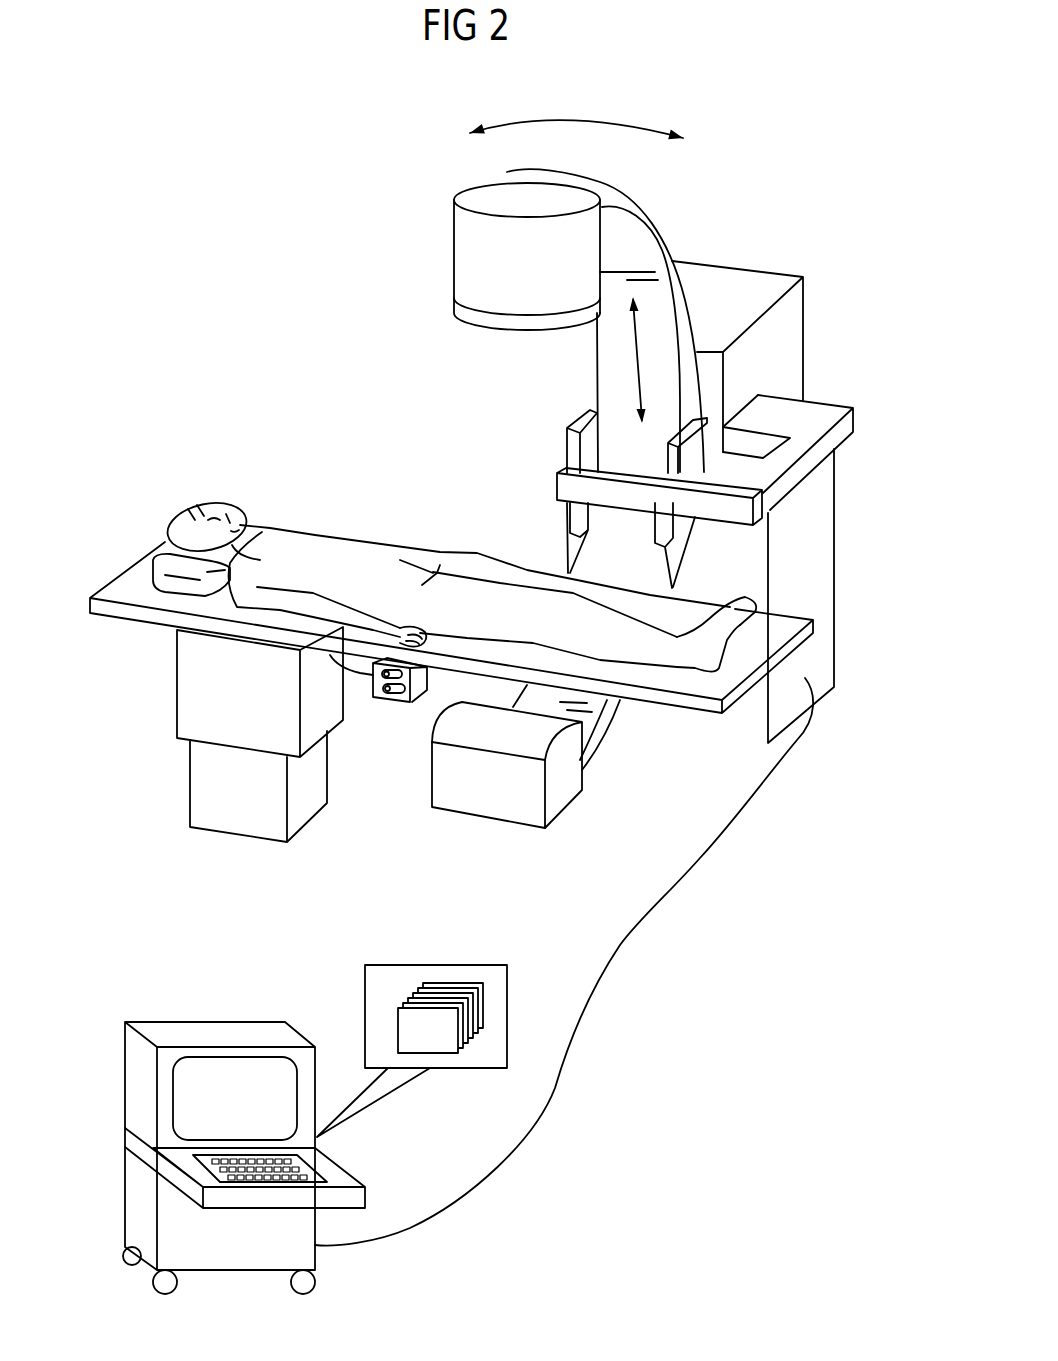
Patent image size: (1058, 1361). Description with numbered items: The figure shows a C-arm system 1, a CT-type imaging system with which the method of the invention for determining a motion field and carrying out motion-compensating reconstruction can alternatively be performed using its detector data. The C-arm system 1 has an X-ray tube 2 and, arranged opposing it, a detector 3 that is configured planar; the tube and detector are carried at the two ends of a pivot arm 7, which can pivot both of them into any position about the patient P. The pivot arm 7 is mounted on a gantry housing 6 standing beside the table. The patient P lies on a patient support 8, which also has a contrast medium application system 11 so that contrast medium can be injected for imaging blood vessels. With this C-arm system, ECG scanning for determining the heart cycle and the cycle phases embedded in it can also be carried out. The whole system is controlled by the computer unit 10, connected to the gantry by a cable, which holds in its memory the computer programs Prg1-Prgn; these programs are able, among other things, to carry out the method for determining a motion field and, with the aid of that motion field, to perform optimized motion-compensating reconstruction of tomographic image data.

The C-arm system 1 is at (226, 403).
The first X-ray tube 2 is at (468, 262).
The first detector 3 is at (562, 793).
The gantry housing 6 is at (807, 317).
The pivot arm 7 is at (668, 222).
The patient support 8 is at (110, 623).
The computer system 10 is at (355, 1177).
The contrast medium applicator 11 is at (393, 706).
The patient P is at (340, 552).
The computer programs Prg1-Prgn is at (443, 1055).